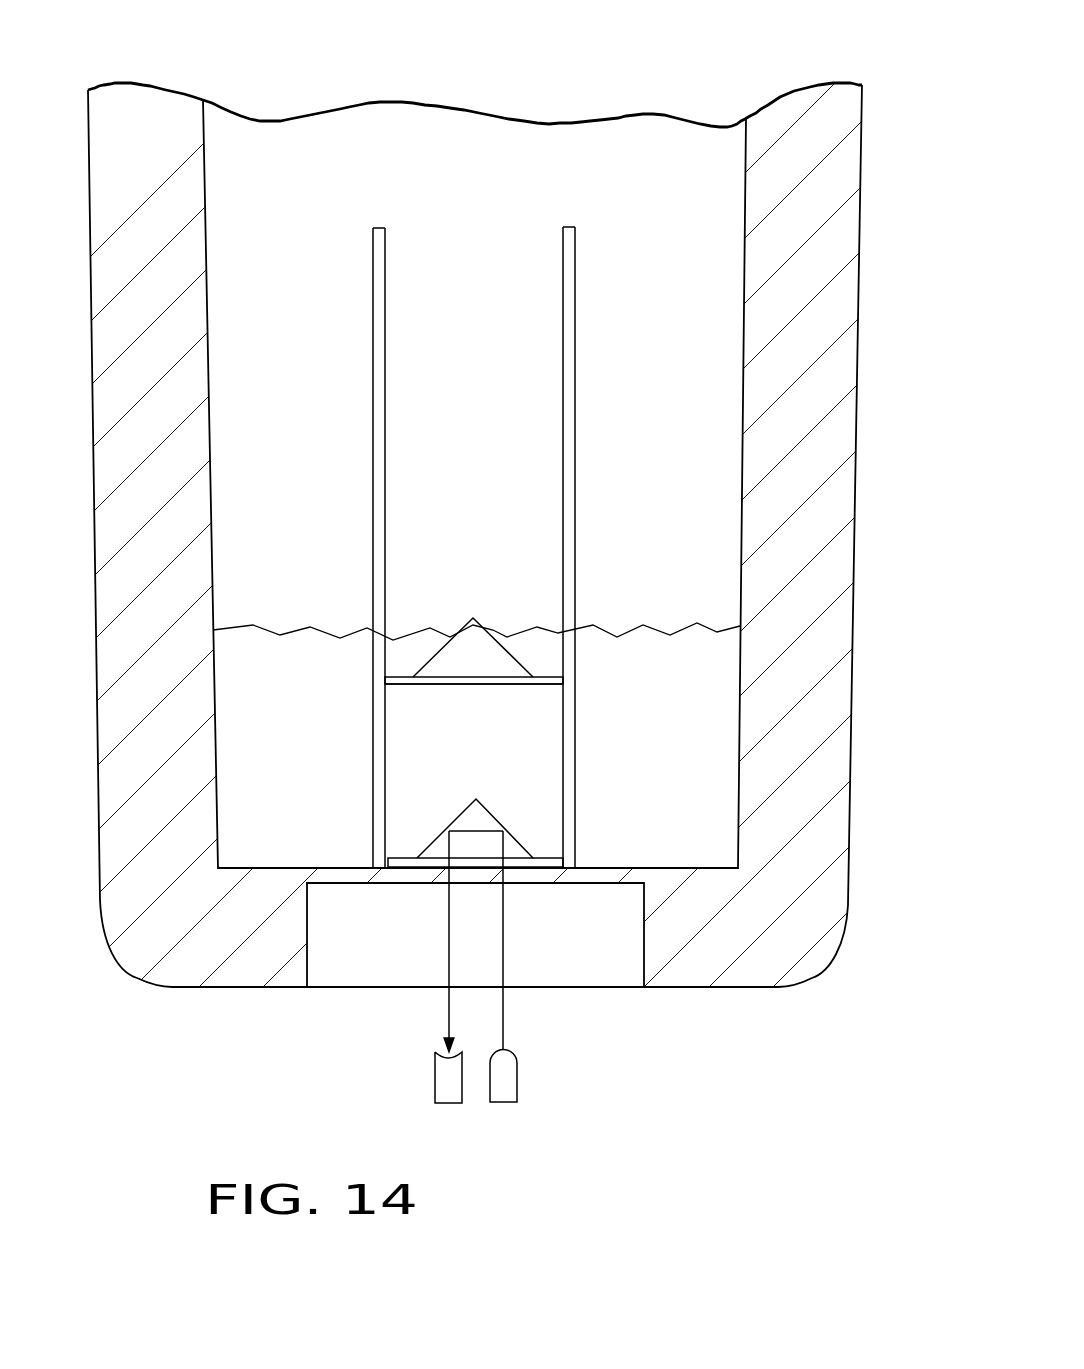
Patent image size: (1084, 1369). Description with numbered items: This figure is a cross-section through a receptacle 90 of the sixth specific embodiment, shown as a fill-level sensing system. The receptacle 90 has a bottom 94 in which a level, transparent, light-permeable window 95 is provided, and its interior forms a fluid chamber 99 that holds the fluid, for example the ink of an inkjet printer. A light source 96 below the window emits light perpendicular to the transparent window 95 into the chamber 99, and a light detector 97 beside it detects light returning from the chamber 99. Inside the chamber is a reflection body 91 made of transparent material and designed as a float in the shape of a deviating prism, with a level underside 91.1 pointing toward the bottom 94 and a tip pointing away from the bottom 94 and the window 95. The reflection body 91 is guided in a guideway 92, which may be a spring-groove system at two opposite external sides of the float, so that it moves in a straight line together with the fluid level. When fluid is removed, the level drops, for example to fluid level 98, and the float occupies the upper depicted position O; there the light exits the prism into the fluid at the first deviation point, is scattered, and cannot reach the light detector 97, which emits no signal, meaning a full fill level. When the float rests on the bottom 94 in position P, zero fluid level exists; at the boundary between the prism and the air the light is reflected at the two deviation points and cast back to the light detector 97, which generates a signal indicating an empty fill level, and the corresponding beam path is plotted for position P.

The receptacle 90 is at (835, 360).
The fluid chamber 99 is at (672, 182).
The guideway 92 is at (563, 322).
The fluid level 98 is at (256, 625).
The position of the reflection body at fluid level 98 O is at (534, 648).
The reflection body 91 is at (443, 673).
The level underside 91.1 is at (539, 688).
The position P of the reflection body P is at (541, 830).
The transparent window 95 is at (585, 886).
The bottom 94 is at (274, 922).
The light detector 97 is at (435, 1078).
The light source 96 is at (512, 1078).